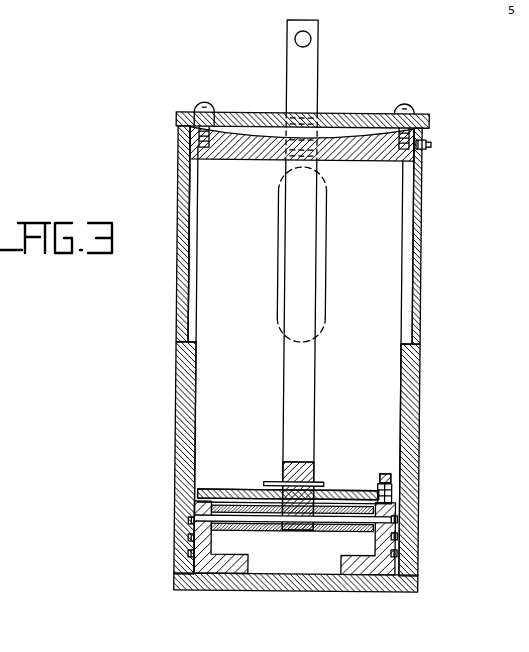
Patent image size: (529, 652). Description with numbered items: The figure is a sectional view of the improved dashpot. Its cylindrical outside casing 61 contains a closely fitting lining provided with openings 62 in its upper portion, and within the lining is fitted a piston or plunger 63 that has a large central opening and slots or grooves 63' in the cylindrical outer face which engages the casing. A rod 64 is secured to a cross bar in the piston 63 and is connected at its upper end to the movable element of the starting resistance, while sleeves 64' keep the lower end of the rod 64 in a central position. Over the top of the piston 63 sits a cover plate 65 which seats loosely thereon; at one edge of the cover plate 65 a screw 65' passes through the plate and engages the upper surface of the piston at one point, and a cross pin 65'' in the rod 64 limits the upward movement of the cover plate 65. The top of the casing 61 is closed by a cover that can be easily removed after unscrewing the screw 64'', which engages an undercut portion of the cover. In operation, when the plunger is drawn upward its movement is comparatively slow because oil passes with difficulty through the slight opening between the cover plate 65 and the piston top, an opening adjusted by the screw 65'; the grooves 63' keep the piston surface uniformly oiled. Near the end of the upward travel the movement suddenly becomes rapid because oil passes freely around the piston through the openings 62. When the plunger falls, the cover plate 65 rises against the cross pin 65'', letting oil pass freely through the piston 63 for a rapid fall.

The cylindrical outside casing 61 is at (420, 320).
The openings 62 is at (190, 266).
The piston 63 is at (294, 567).
The slots or grooves 63' is at (292, 536).
The rod 64 is at (321, 275).
The sleeves 64' is at (292, 536).
The screw 64'' is at (455, 146).
The cover plate 65 is at (295, 480).
The screw 65' is at (423, 477).
The cross pin 65'' is at (313, 466).